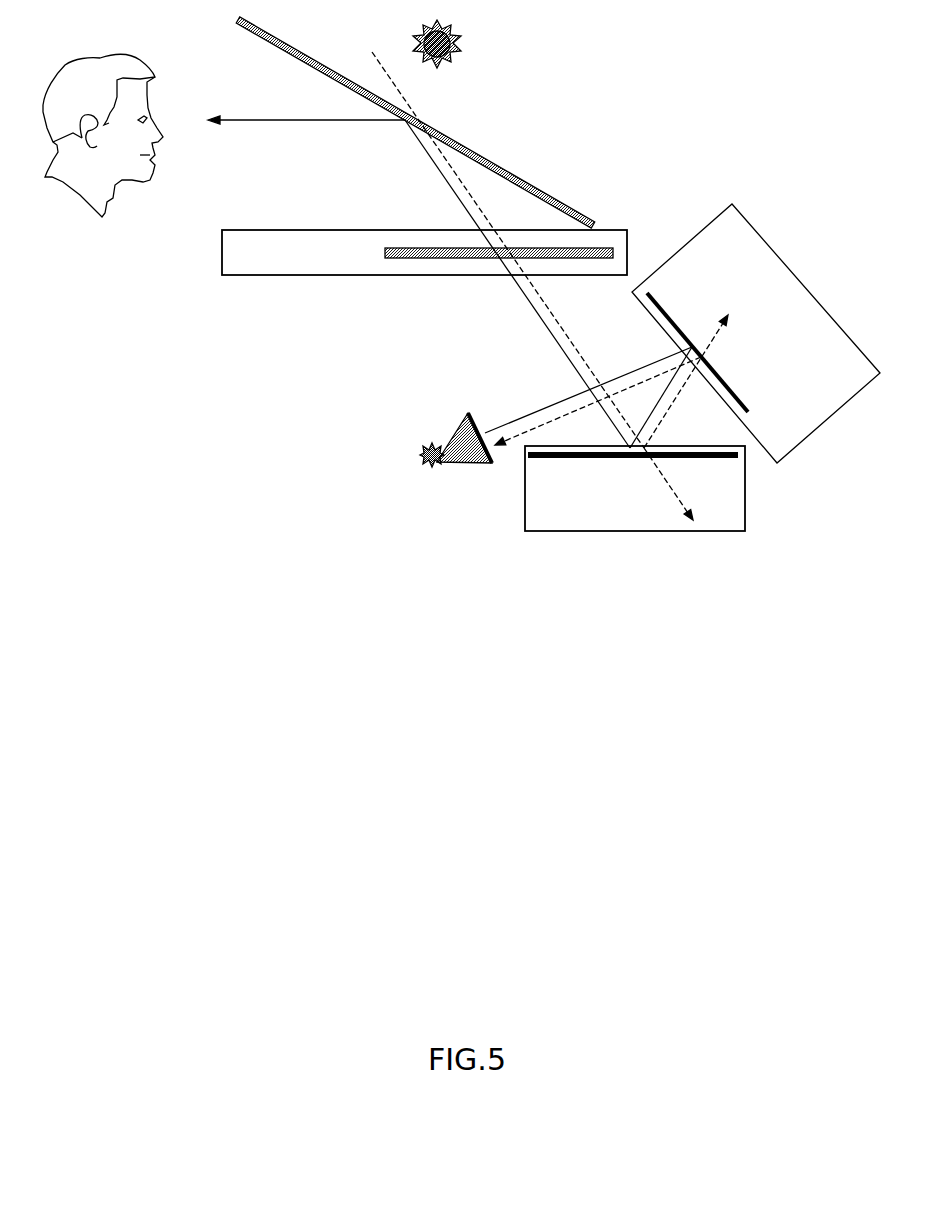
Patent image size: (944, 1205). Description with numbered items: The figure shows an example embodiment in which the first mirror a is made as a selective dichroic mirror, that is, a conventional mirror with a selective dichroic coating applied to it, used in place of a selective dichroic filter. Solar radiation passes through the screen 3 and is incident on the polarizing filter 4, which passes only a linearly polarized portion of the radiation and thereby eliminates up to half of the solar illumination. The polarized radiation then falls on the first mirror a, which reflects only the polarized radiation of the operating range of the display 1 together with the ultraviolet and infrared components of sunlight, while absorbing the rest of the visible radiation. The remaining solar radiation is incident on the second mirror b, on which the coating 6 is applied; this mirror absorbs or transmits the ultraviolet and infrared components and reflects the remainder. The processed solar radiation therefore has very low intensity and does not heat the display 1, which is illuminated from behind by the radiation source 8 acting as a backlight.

The display 1 is at (488, 466).
The screen 3 is at (502, 165).
The polarizing filter 4 is at (622, 232).
The coating 6 is at (692, 347).
The radiation source 8 is at (412, 457).
The first mirror a is at (610, 462).
The second mirror b is at (745, 400).